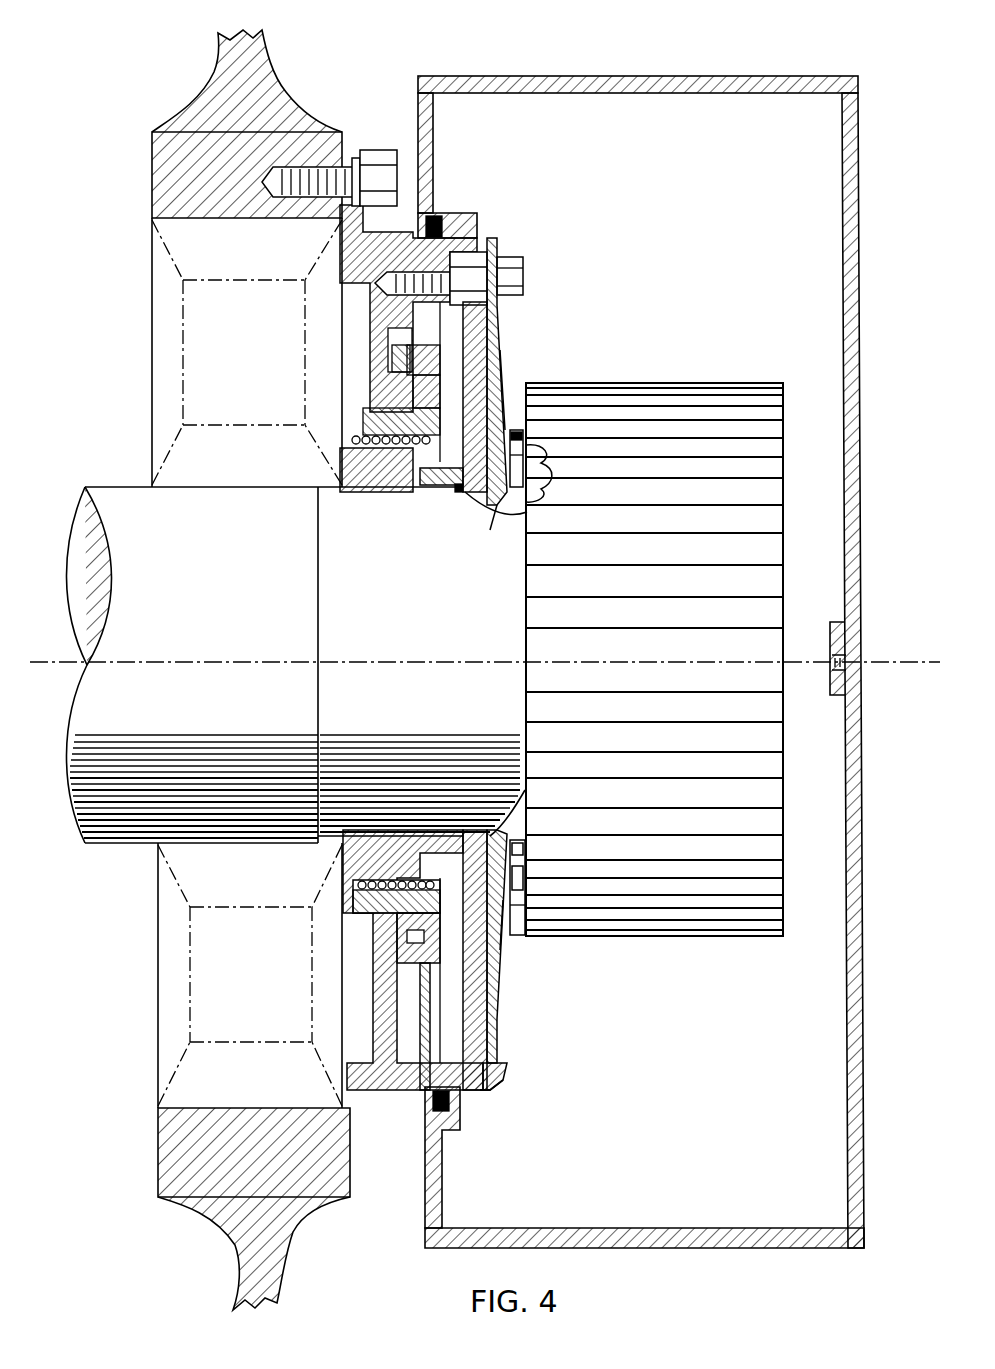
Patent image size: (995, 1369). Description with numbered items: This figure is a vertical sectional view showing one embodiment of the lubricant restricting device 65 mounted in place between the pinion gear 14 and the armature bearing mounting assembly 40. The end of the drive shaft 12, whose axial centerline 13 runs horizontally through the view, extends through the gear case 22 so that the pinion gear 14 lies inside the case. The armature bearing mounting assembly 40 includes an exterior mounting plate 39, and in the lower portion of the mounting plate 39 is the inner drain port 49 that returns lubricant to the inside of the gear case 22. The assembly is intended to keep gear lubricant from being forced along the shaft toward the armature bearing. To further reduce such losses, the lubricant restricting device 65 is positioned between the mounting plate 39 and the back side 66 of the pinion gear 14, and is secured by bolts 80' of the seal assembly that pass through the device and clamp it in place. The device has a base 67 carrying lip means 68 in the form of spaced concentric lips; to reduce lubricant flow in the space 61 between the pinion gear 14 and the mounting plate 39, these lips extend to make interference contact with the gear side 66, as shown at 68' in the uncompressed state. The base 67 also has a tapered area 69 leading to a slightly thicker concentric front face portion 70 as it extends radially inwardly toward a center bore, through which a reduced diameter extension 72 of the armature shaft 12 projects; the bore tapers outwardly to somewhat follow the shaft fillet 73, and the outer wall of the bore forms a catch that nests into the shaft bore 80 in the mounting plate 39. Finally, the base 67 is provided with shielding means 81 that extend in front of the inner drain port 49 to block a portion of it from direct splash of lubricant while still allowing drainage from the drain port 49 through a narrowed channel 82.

The drive shaft 12 is at (408, 622).
The axial centerline 13 is at (138, 657).
The pinion gear 14 is at (750, 442).
The gear case 22 is at (660, 76).
The mounting plate 39 is at (480, 336).
The armature bearing mounting assembly 40 is at (403, 212).
The inner drain port 49 is at (476, 1057).
The space 61 is at (512, 378).
The lubricant restricting device 65 is at (509, 345).
The back side of the pinion gear 66 is at (527, 408).
The base 67 is at (508, 953).
The lip means 68 is at (569, 850).
The lips in interference contact 68' is at (607, 426).
The tapered area 69 is at (513, 999).
The front face portion 70 is at (512, 913).
The reduced diameter extension 72 is at (518, 505).
The shaft fillet 73 is at (492, 500).
The shaft bore 80 is at (427, 509).
The bolts 80' is at (472, 263).
The shielding means 81 is at (518, 1067).
The narrowed channel 82 is at (504, 1090).